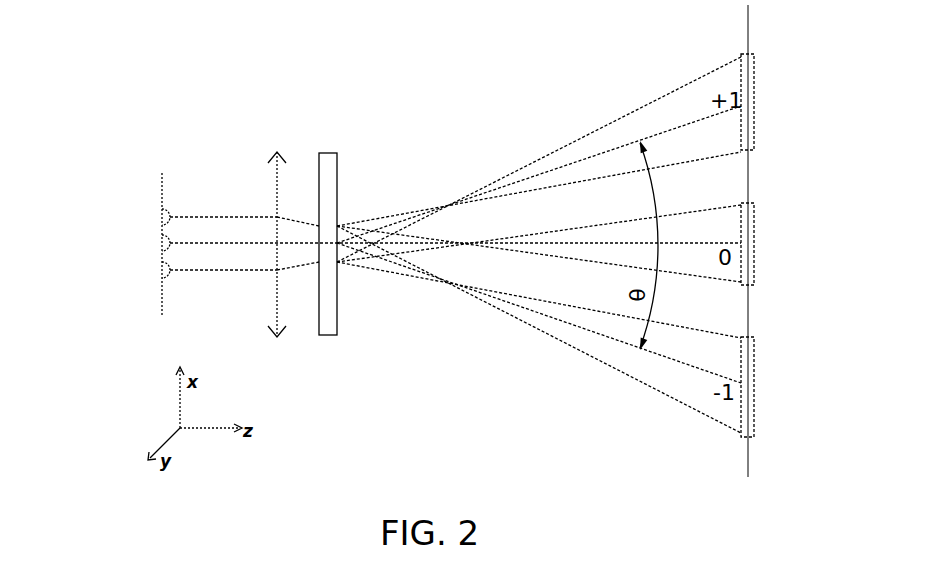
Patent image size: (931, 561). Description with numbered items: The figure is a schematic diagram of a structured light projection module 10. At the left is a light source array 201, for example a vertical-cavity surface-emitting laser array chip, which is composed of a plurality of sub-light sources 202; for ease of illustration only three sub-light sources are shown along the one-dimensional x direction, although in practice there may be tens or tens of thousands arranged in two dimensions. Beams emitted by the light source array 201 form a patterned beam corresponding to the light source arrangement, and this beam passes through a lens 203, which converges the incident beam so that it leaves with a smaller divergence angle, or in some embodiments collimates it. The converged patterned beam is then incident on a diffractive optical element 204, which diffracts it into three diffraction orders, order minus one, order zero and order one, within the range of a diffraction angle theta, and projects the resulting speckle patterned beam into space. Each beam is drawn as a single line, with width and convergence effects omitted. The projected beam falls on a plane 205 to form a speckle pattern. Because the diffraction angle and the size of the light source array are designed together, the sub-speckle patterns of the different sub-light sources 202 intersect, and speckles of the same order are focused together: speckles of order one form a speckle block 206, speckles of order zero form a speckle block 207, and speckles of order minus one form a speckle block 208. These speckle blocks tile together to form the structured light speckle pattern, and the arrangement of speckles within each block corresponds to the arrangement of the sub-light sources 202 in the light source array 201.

The structured light projection module 10 is at (248, 55).
The light source array 201 is at (162, 183).
The sub-light sources 202 is at (162, 270).
The lens 203 is at (272, 183).
The diffractive optical element (DOE) 204 is at (337, 160).
The plane 205 is at (748, 42).
The speckle block 206 is at (756, 95).
The speckle block 207 is at (756, 225).
The speckle block 208 is at (756, 360).